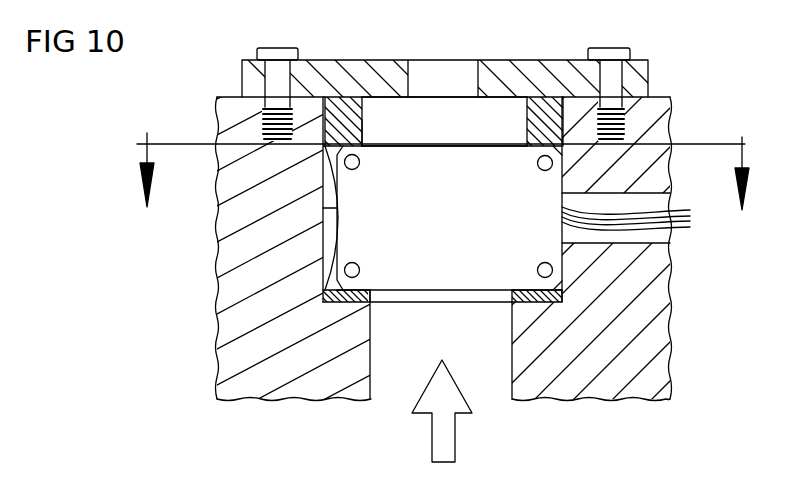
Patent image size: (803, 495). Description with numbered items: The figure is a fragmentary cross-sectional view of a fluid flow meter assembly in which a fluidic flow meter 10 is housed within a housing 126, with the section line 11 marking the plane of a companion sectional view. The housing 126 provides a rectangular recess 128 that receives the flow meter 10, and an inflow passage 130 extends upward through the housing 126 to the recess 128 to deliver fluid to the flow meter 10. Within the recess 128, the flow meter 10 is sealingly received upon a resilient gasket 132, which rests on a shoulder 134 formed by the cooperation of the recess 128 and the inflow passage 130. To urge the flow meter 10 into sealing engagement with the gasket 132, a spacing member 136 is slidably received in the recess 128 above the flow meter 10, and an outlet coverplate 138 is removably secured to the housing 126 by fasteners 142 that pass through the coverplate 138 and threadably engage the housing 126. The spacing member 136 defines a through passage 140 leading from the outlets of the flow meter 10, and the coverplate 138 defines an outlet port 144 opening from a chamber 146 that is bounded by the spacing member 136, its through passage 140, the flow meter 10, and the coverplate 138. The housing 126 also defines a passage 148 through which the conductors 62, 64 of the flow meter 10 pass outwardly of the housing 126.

The fluidic flow meter 10 is at (455, 225).
The section line 11- 11 is at (443, 185).
The conductor 62 is at (686, 223).
The conductor 64 is at (686, 212).
The housing 126 is at (658, 364).
The rectangular recess 128 is at (337, 210).
The inflow passage 130 is at (512, 372).
The resilient gasket 132 is at (363, 293).
The shoulder 134 is at (512, 293).
The spacing member 136 is at (343, 108).
The outlet coverplate 138 is at (510, 70).
The through passage 140 is at (362, 127).
The fasteners 142 is at (300, 50).
The outlet port 144 is at (477, 68).
The chamber 146 is at (462, 136).
The passage 148 is at (669, 196).